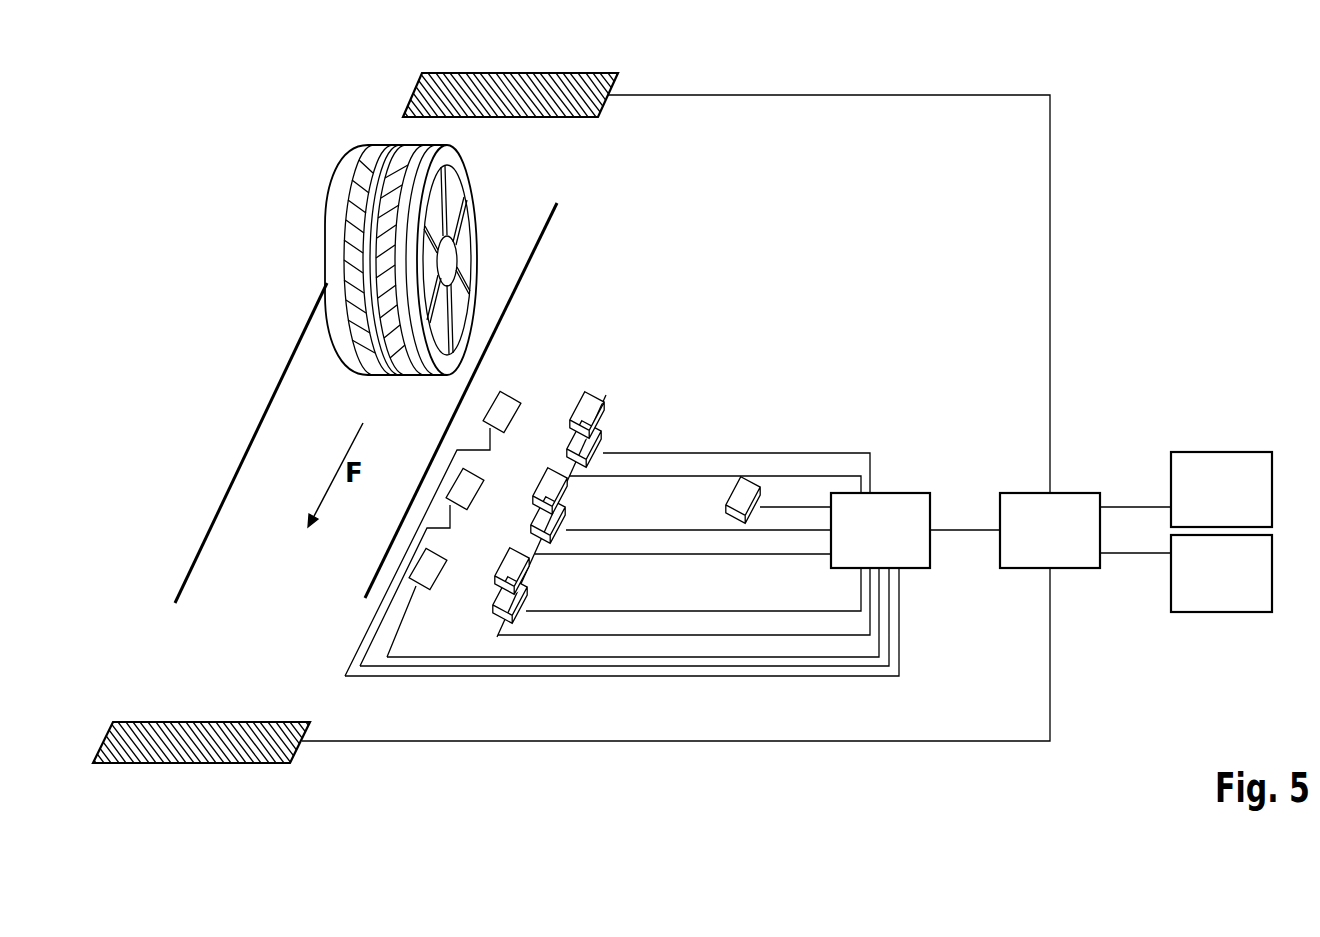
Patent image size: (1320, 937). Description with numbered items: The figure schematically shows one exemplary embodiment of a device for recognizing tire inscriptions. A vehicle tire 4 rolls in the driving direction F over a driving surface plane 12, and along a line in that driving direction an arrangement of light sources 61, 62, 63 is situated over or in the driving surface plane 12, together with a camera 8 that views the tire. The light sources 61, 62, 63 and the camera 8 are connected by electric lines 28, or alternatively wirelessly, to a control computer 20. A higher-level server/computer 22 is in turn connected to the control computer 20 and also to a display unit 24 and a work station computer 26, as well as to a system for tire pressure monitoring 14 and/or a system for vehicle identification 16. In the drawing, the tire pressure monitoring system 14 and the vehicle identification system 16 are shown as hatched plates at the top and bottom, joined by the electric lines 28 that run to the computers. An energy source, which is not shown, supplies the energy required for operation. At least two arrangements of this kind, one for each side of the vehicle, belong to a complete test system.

The vehicle tire 4 is at (326, 168).
The camera 8 is at (745, 492).
The driving surface plane 12 is at (228, 535).
The system for tire pressure monitoring 14 is at (513, 88).
The system for vehicle identification 16 is at (205, 735).
The control computer 20 is at (903, 493).
The higher-level server/computer 22 is at (1082, 493).
The display unit 24 is at (1220, 452).
The work station computer 26 is at (1223, 612).
The electric lines 28 is at (1052, 170).
The light source 61 is at (602, 438).
The light source 62 is at (590, 406).
The light source 63 is at (508, 413).